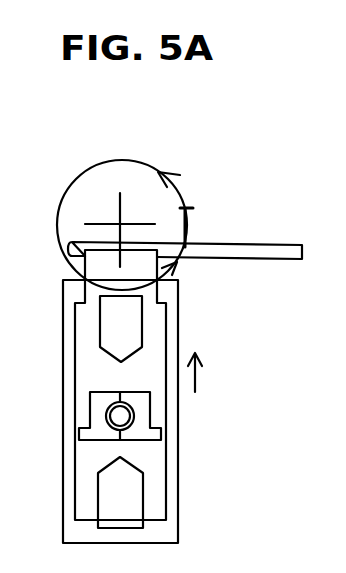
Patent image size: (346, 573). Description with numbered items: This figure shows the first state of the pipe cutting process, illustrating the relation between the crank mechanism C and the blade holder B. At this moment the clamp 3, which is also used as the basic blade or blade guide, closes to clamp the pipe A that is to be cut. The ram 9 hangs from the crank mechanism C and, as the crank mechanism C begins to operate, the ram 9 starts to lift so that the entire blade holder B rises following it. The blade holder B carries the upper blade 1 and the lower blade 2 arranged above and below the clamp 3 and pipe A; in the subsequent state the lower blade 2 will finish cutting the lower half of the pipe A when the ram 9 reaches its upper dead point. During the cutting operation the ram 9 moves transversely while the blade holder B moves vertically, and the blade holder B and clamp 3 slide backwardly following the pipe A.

The upper blade 1 is at (111, 344).
The lower blade 2 is at (111, 516).
The clamp 3 is at (90, 418).
The ram 9 is at (224, 258).
The pipe A is at (150, 412).
The blade holder B is at (63, 322).
The crank mechanism C is at (132, 161).